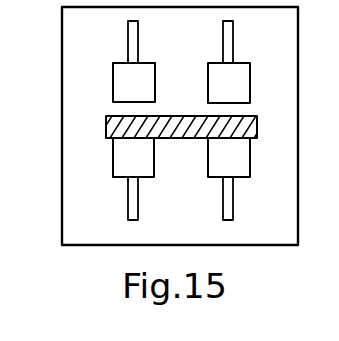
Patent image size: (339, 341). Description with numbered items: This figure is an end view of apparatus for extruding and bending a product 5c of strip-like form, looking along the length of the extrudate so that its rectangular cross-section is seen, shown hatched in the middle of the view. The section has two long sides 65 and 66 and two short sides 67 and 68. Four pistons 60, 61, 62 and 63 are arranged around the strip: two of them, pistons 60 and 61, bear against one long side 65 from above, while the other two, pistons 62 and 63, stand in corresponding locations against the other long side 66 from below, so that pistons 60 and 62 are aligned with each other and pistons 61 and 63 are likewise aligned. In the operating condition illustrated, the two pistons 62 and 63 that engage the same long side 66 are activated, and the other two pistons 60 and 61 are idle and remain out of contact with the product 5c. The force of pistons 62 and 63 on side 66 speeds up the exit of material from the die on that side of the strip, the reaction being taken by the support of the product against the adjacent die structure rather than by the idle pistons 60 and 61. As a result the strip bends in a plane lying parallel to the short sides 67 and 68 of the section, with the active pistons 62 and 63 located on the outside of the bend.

The product of strip-like form 5c is at (184, 104).
The piston 60 is at (235, 72).
The piston 61 is at (123, 75).
The piston 62 is at (242, 150).
The piston 63 is at (120, 162).
The long side of the product cross-section 65 is at (228, 116).
The long side of the product cross-section 66 is at (185, 138).
The short side of the product section 67 is at (257, 131).
The short side of the product section 68 is at (106, 128).